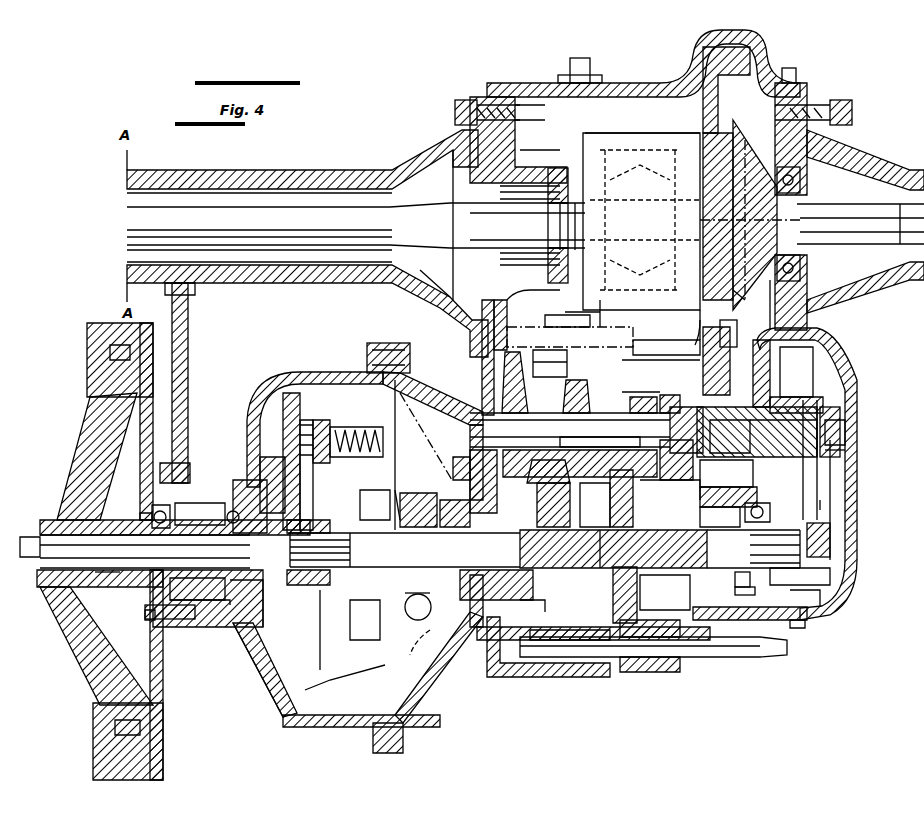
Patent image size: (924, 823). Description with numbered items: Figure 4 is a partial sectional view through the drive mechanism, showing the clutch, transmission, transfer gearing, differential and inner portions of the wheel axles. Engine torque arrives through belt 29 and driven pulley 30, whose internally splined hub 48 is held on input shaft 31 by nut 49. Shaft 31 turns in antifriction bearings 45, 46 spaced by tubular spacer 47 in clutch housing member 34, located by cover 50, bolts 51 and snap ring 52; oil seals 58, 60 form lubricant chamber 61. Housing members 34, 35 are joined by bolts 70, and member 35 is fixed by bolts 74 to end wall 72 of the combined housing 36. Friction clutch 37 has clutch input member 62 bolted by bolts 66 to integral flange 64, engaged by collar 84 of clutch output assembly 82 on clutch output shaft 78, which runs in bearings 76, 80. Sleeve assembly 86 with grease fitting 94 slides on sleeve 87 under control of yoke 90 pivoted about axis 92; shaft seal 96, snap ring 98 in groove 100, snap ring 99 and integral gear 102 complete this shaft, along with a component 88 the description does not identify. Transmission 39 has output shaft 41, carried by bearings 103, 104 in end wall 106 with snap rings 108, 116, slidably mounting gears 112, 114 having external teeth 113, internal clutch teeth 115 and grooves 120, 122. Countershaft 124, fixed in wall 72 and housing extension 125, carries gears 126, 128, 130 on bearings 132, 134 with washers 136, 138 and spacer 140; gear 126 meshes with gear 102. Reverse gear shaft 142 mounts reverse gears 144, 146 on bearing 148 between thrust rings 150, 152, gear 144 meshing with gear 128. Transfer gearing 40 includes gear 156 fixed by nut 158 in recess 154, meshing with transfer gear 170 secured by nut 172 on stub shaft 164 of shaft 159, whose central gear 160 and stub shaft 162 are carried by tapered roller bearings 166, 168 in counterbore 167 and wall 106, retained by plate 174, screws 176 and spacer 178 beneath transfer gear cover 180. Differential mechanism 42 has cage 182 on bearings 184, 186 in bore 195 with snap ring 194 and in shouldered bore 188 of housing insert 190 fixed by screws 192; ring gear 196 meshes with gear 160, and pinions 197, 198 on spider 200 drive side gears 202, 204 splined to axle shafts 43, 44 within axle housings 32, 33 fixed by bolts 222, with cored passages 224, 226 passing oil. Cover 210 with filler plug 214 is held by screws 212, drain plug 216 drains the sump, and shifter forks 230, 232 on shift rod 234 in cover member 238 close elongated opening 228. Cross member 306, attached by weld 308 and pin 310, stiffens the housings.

The belt 29 is at (110, 322).
The driven pulley 30 is at (95, 362).
The input shaft 31 is at (145, 550).
The axle housing 32 is at (878, 160).
The axle housing 33 is at (420, 162).
The clutch housing member 34 is at (292, 368).
The clutch housing member 35 is at (440, 392).
The transmission-differential housing 36 is at (815, 331).
The friction clutch 37 is at (338, 688).
The multi-speed transmission 39 is at (490, 372).
The transfer gearing 40 is at (832, 509).
The transmission output shaft 41 is at (730, 553).
The differential mechanism 42 is at (700, 333).
The axle shaft 43 is at (858, 213).
The axle shaft 44 is at (412, 212).
The antifriction bearing 45 is at (152, 512).
The antifriction bearing 46 is at (225, 512).
The tubular spacer 47 is at (185, 580).
The hub 48 is at (105, 580).
The nut 49 is at (30, 533).
The cover 50 is at (138, 514).
The bolts 51 is at (138, 616).
The snap ring 52 is at (155, 505).
The oil seal 58 is at (143, 606).
The oil seal 60 is at (222, 615).
The lubricant retaining chamber 61 is at (178, 610).
The clutch input member 62 is at (305, 400).
The integral flange 64 is at (260, 470).
The bolts 66 is at (238, 632).
The bolts 70 is at (375, 345).
The end wall 72 is at (494, 371).
The bolts 74 is at (468, 445).
The bearing 76 is at (255, 506).
The clutch output shaft 78 is at (342, 532).
The bearing 80 is at (505, 585).
The clutch output assembly 82 is at (350, 432).
The collar 84 is at (318, 518).
The sleeve assembly 86 is at (372, 490).
The sleeve 87 is at (410, 549).
The bearing 88 is at (455, 468).
The yoke 90 is at (432, 600).
The axis 92 is at (420, 628).
The grease fitting 94 is at (395, 490).
The shaft seal 96 is at (462, 498).
The snap ring 98 is at (462, 515).
The snap ring 99 is at (503, 485).
The groove 100 is at (432, 612).
The gear 102 is at (530, 590).
The bearing 103 is at (613, 549).
The bearing 104 is at (735, 580).
The end wall 106 is at (800, 624).
The snap rings 108 is at (740, 592).
The gear 112 is at (575, 500).
The external gear teeth 113 is at (555, 480).
The gear 114 is at (625, 398).
The internal clutch teeth 115 is at (560, 502).
The snap ring 116 is at (750, 523).
The shifting fork groove 120 is at (572, 512).
The shifting fork groove 122 is at (680, 500).
The countershaft 124 is at (572, 408).
The housing extension 125 is at (685, 480).
The gear 126 is at (522, 380).
The gear 128 is at (595, 420).
The gear 130 is at (655, 380).
The antifriction bearing 132 is at (528, 422).
The antifriction bearing 134 is at (652, 393).
The bearing washer 136 is at (492, 380).
The bearing washer 138 is at (680, 436).
The sleeve type spacer 140 is at (536, 422).
The reverse gear shaft 142 is at (520, 335).
The reverse gear 144 is at (560, 370).
The reverse gear 146 is at (610, 370).
The antifriction bearing 148 is at (590, 318).
The thrust ring 150 is at (558, 315).
The thrust ring 152 is at (685, 327).
The recess 154 is at (812, 607).
The transmission output gear 156 is at (835, 575).
The nut 158 is at (830, 540).
The shaft 159 is at (730, 436).
The central gear 160 is at (757, 432).
The stub shaft 162 is at (717, 370).
The stub shaft 164 is at (843, 412).
The tapered roller bearing 166 is at (708, 523).
The counterbore 167 is at (728, 347).
The tapered roller bearing 168 is at (748, 476).
The transfer gear 170 is at (847, 455).
The nut 172 is at (847, 440).
The retaining plate 174 is at (820, 395).
The screws 176 is at (838, 495).
The spacer 178 is at (783, 438).
The transfer gear cover 180 is at (848, 510).
The differential cage 182 is at (695, 105).
The tapered roller bearing 184 is at (805, 184).
The tapered roller bearing 186 is at (545, 261).
The shouldered bore 188 is at (562, 172).
The cylindrical housing insert 190 is at (540, 165).
The screws 192 is at (440, 288).
The snap ring 194 is at (805, 273).
The bore 195 is at (770, 285).
The ring gear 196 is at (752, 62).
The differential pinion 197 is at (737, 285).
The differential pinion 198 is at (600, 142).
The spider 200 is at (662, 133).
The differential side gear 202 is at (733, 222).
The differential side gear 204 is at (545, 196).
The cover 210 is at (688, 52).
The screws 212 is at (800, 73).
The oil filler plug 214 is at (580, 58).
The drain plug 216 is at (545, 226).
The screws or bolts 222 is at (452, 112).
The cored passage 224 is at (843, 143).
The cored passage 226 is at (535, 140).
The elongated opening 228 is at (690, 605).
The shifter fork 230 is at (606, 549).
The shifter fork 232 is at (637, 600).
The shift rod 234 is at (570, 665).
The cover member 238 is at (660, 672).
The cross member 306 is at (190, 371).
The weld 308 is at (195, 295).
The pin 310 is at (188, 472).